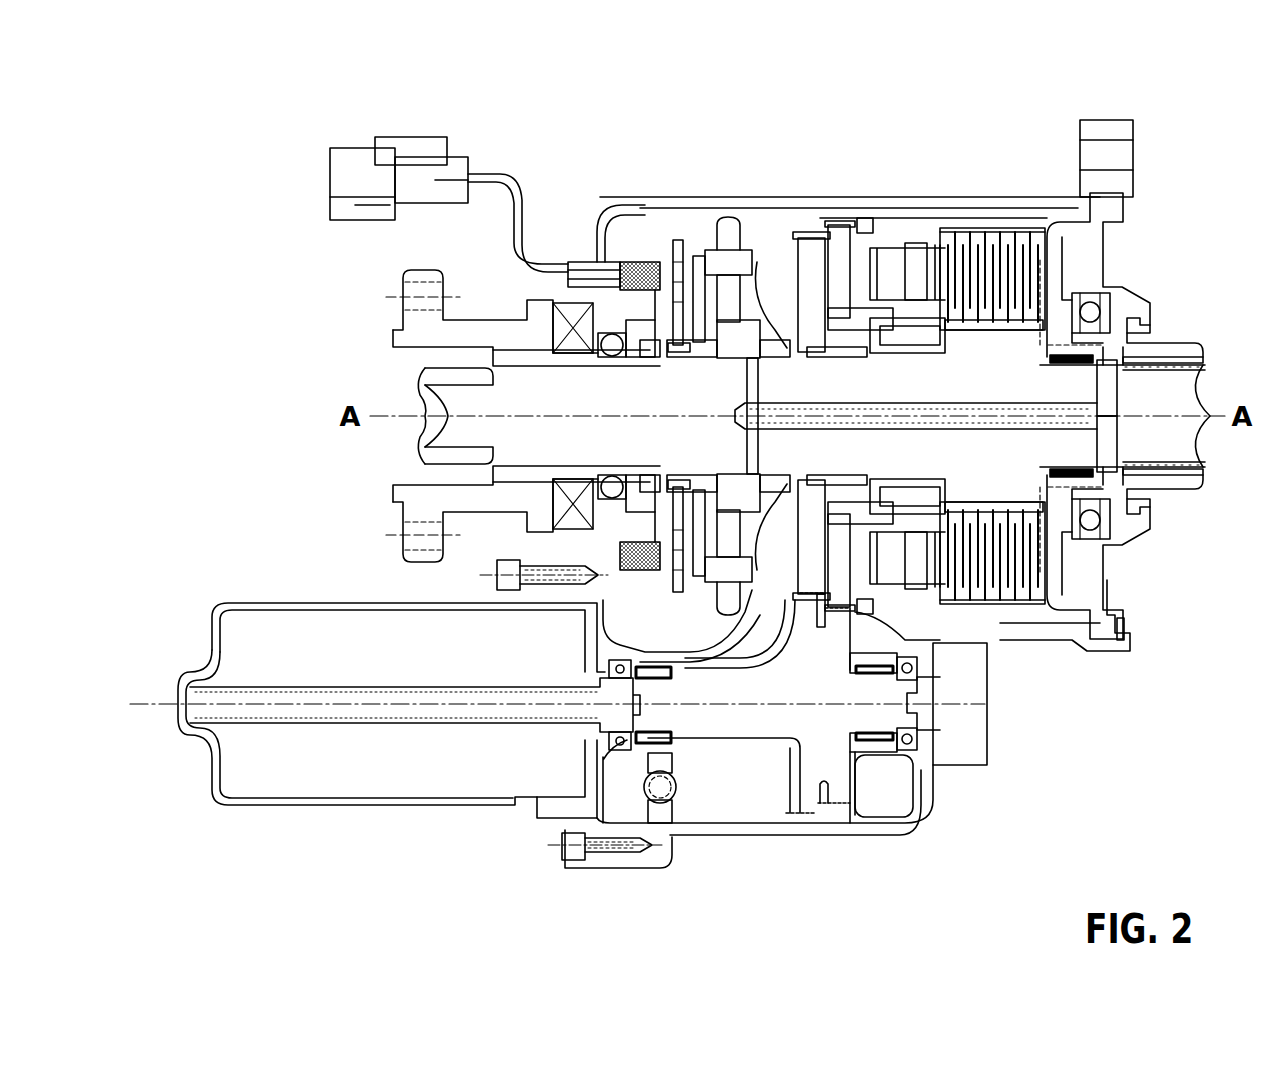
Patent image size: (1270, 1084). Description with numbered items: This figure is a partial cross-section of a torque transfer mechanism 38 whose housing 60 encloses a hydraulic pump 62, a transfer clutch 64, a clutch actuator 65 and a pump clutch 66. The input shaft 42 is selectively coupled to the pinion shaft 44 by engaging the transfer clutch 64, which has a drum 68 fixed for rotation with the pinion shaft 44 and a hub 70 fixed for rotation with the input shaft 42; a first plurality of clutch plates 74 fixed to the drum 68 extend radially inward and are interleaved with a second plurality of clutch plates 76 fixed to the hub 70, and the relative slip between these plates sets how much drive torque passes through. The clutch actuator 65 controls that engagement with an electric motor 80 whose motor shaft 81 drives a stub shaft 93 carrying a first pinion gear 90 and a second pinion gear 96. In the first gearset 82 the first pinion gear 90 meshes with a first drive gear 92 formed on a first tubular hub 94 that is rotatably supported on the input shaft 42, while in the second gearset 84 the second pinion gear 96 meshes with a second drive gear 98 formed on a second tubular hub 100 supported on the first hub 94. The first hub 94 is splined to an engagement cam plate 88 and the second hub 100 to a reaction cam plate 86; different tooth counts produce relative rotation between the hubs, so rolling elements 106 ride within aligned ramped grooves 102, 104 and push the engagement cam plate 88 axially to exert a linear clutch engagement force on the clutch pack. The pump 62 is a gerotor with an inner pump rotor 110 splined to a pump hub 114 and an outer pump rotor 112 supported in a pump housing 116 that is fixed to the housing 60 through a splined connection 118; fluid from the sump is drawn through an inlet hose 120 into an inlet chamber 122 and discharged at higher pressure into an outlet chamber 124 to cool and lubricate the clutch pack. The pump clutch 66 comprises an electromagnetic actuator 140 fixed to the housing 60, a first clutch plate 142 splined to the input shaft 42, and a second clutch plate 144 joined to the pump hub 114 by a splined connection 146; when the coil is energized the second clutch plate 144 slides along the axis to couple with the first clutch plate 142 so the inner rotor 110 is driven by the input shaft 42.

The torque transfer mechanism 38 is at (1110, 672).
The input shaft 42 is at (430, 393).
The pinion shaft 44 is at (1210, 392).
The housing 60 is at (1055, 195).
The hydraulic pump 62 is at (755, 262).
The transfer clutch 64 is at (986, 212).
The clutch actuator 65 is at (686, 800).
The pump clutch 66 is at (663, 252).
The drum 68 is at (1060, 244).
The hub 70 is at (1030, 497).
The first plurality of clutch plates 74 is at (1075, 234).
The second plurality of clutch plates 76 is at (1030, 522).
The electric motor 80 is at (412, 806).
The motor shaft 81 is at (512, 690).
The first gearset 82 is at (790, 605).
The second gearset 84 is at (846, 618).
The reaction cam plate 86 is at (918, 258).
The engagement cam plate 88 is at (938, 262).
The first pinion gear 90 is at (802, 815).
The first drive gear 92 is at (812, 283).
The stub shaft 93 is at (757, 722).
The first tubular hub 94 is at (884, 345).
The second pinion gear 96 is at (835, 804).
The second drive gear 98 is at (840, 225).
The second tubular hub 100 is at (930, 318).
The ramped grooves 102 is at (905, 268).
The ramped grooves 104 is at (960, 258).
The rolling elements 106 is at (937, 268).
The inner pump rotor 110 is at (713, 345).
The outer pump rotor 112 is at (728, 232).
The pump hub 114 is at (727, 488).
The pump housing 116 is at (770, 488).
The splined connection 118 is at (748, 240).
The inlet hose 120 is at (745, 633).
The inlet chamber 122 is at (752, 514).
The outlet chamber 124 is at (752, 348).
The electromagnetic actuator 140 is at (627, 235).
The first clutch plate 142 is at (645, 250).
The second clutch plate 144 is at (690, 245).
The splined connection 146 is at (663, 418).